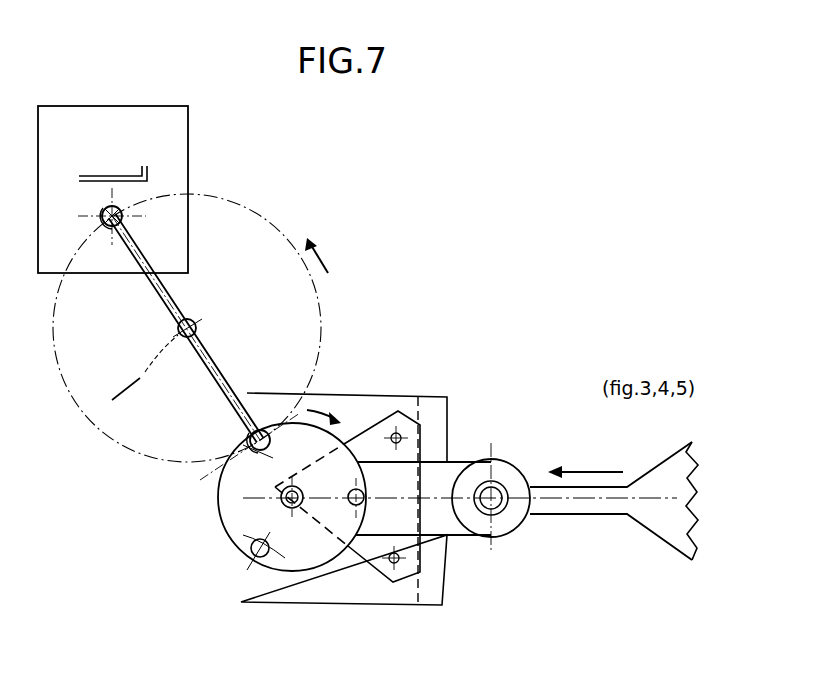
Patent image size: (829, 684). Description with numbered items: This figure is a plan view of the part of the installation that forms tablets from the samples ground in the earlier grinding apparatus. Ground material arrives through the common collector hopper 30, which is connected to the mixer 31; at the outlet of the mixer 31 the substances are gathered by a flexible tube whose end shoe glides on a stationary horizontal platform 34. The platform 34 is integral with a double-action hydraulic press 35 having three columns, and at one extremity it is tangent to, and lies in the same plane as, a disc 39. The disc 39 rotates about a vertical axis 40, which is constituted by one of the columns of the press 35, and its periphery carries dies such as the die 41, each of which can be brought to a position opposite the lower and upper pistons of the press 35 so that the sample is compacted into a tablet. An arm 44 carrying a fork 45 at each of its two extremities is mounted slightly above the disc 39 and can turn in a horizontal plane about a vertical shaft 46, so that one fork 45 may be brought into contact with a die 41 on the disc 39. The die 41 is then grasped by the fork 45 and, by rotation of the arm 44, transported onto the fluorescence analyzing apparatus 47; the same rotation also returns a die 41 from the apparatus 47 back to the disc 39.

The common collector hopper 30 is at (660, 482).
The mixer 31 is at (507, 530).
The stationary horizontal platform 34 is at (445, 472).
The double-action hydraulic press 35 is at (383, 433).
The disc 39 is at (243, 537).
The vertical axis 40 is at (273, 507).
The die 41 is at (352, 507).
The arm 44 is at (225, 375).
The fork 45 is at (247, 452).
The vertical shaft 46 is at (193, 320).
The fluorescence analyzing apparatus 47 is at (175, 146).